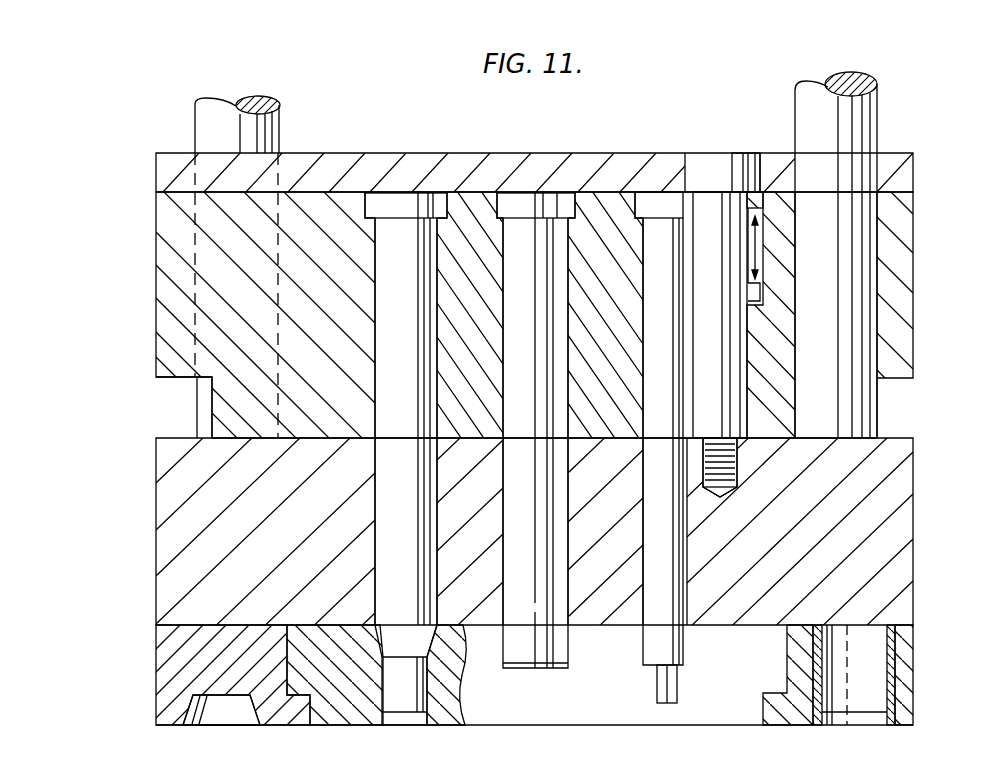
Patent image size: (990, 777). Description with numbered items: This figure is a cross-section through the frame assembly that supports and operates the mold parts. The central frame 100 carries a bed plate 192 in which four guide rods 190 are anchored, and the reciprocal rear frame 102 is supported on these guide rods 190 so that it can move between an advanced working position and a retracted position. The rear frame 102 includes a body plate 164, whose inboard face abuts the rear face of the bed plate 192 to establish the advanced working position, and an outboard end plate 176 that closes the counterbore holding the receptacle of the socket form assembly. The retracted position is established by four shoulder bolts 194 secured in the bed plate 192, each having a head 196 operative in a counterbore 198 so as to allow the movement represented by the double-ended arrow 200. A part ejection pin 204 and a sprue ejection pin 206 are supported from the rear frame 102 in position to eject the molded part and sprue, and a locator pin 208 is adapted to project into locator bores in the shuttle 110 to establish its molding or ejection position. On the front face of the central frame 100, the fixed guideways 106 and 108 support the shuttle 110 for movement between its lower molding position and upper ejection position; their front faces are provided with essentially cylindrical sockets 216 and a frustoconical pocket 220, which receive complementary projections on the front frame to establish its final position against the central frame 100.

The central frame 100 is at (492, 525).
The rear frame 102 is at (498, 288).
The fixed guideway 106 is at (279, 675).
The fixed guideway 108 is at (867, 675).
The shuttle 110 is at (572, 710).
The body plate 164 is at (155, 347).
The outboard end plate 176 is at (505, 162).
The guide rod 190 is at (281, 128).
The bed plate 192 is at (160, 490).
The shoulder bolt 194 is at (735, 382).
The head 196 is at (722, 166).
The counterbore 198 is at (763, 294).
The double-ended arrow 200 is at (763, 249).
The part ejection pin 204 is at (688, 650).
The sprue ejection pin 206 is at (558, 648).
The locator pin 208 is at (415, 539).
The cylindrical socket 216 is at (878, 686).
The frustoconical pocket 220 is at (190, 716).